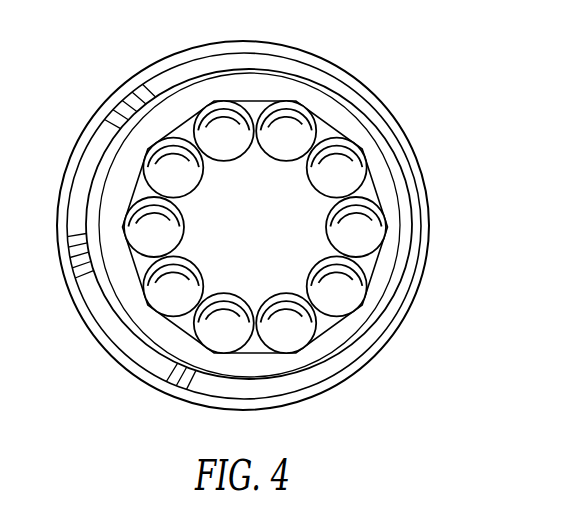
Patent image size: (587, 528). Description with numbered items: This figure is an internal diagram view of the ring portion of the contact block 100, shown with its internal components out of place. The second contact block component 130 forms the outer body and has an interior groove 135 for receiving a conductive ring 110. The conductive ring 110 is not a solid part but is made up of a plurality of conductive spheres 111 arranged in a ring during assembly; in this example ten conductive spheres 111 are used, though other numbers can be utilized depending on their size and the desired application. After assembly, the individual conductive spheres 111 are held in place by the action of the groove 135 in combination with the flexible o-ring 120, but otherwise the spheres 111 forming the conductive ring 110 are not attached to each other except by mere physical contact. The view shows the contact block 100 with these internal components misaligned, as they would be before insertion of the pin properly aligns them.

The contact block 100 is at (293, 231).
The conductive ring 110 is at (355, 133).
The conductive spheres 111 is at (292, 130).
The flexible o-ring 120 is at (385, 178).
The second contact block component 130 is at (88, 318).
The interior groove 135 is at (376, 189).